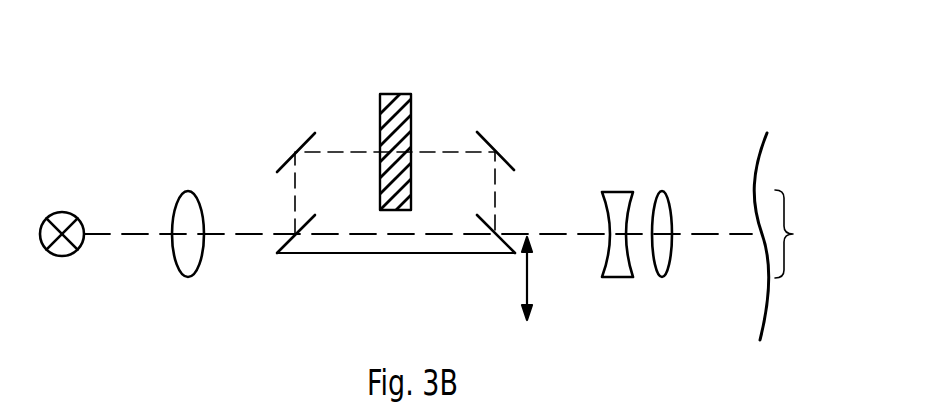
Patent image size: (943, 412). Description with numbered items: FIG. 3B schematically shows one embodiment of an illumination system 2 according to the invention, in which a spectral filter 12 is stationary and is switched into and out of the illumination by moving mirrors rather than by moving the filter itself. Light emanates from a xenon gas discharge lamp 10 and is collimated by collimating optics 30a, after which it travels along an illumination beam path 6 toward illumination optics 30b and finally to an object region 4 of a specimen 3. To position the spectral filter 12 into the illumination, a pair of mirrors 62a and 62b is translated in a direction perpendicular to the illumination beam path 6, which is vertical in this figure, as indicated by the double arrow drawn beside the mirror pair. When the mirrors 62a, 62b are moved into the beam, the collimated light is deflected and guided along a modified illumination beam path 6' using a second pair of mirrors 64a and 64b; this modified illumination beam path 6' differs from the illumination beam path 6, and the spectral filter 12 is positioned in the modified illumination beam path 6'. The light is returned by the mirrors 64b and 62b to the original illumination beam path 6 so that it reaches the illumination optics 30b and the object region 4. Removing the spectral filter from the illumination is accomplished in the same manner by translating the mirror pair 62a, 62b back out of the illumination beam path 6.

The optical system / microscope arrangement 2 is at (726, 97).
The specimen / sample 3 is at (777, 315).
The object region 4 is at (794, 234).
The illumination beam path 6 is at (418, 269).
The modified illumination beam path 6' is at (395, 193).
The xenon gas discharge lamp 10 is at (61, 211).
The spectral filter 12 is at (395, 93).
The collimating optics 30a is at (188, 191).
The illumination optics 30b is at (673, 180).
The first mirror of translatable mirror pair 62a is at (288, 238).
The second mirror of translatable mirror pair 62b is at (500, 243).
The first mirror of stationary mirror pair 64a is at (302, 145).
The second mirror of stationary mirror pair 64b is at (493, 145).